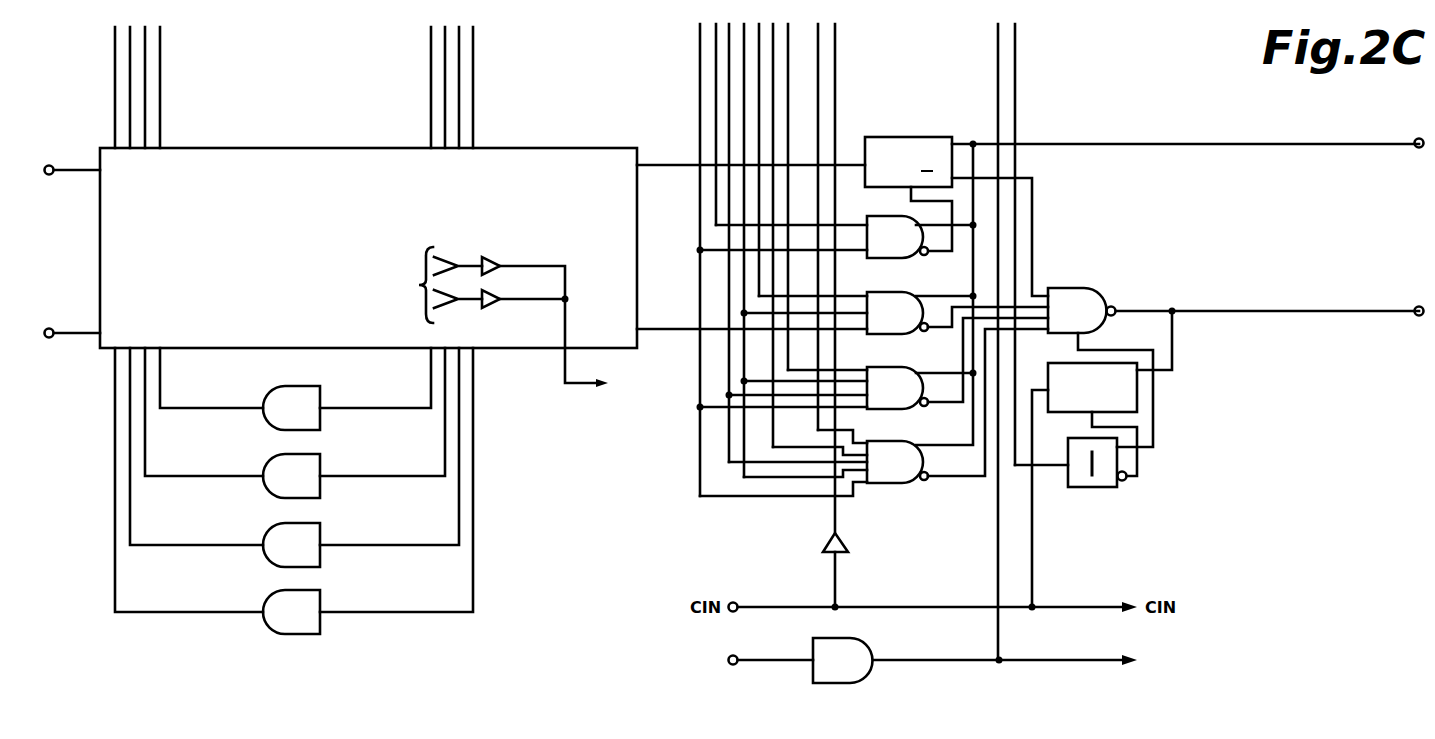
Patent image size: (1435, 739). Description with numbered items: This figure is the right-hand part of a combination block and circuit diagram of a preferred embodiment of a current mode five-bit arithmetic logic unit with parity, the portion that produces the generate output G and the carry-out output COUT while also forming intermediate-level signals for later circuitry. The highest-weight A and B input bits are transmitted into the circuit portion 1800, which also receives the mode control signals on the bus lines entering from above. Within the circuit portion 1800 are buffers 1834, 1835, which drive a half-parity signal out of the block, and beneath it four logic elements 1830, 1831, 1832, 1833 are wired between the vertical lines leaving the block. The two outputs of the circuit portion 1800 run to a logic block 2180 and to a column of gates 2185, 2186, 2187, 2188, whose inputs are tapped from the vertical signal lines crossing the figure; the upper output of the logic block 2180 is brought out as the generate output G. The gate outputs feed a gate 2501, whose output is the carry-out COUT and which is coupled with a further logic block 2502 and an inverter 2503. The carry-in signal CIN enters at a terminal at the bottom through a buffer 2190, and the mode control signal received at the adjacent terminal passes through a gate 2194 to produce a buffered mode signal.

The circuit portion 1800 is at (554, 148).
The AND gate 1830 is at (267, 392).
The AND gate 1831 is at (267, 463).
The AND gate 1832 is at (267, 532).
The AND gate 1833 is at (267, 599).
The buffer 1834 is at (491, 258).
The buffer 1835 is at (487, 308).
The YZ logic block 2180 is at (905, 137).
The NAND gate 2185 is at (905, 217).
The NAND gate 2186 is at (905, 292).
The NAND gate 2187 is at (905, 367).
The NAND gate 2188 is at (905, 441).
The buffer 2190 is at (849, 546).
The AND gate 2194 is at (860, 646).
The NAND gate 2501 is at (1092, 290).
The YZ logic block 2502 is at (1048, 371).
The inverter 2503 is at (1068, 446).